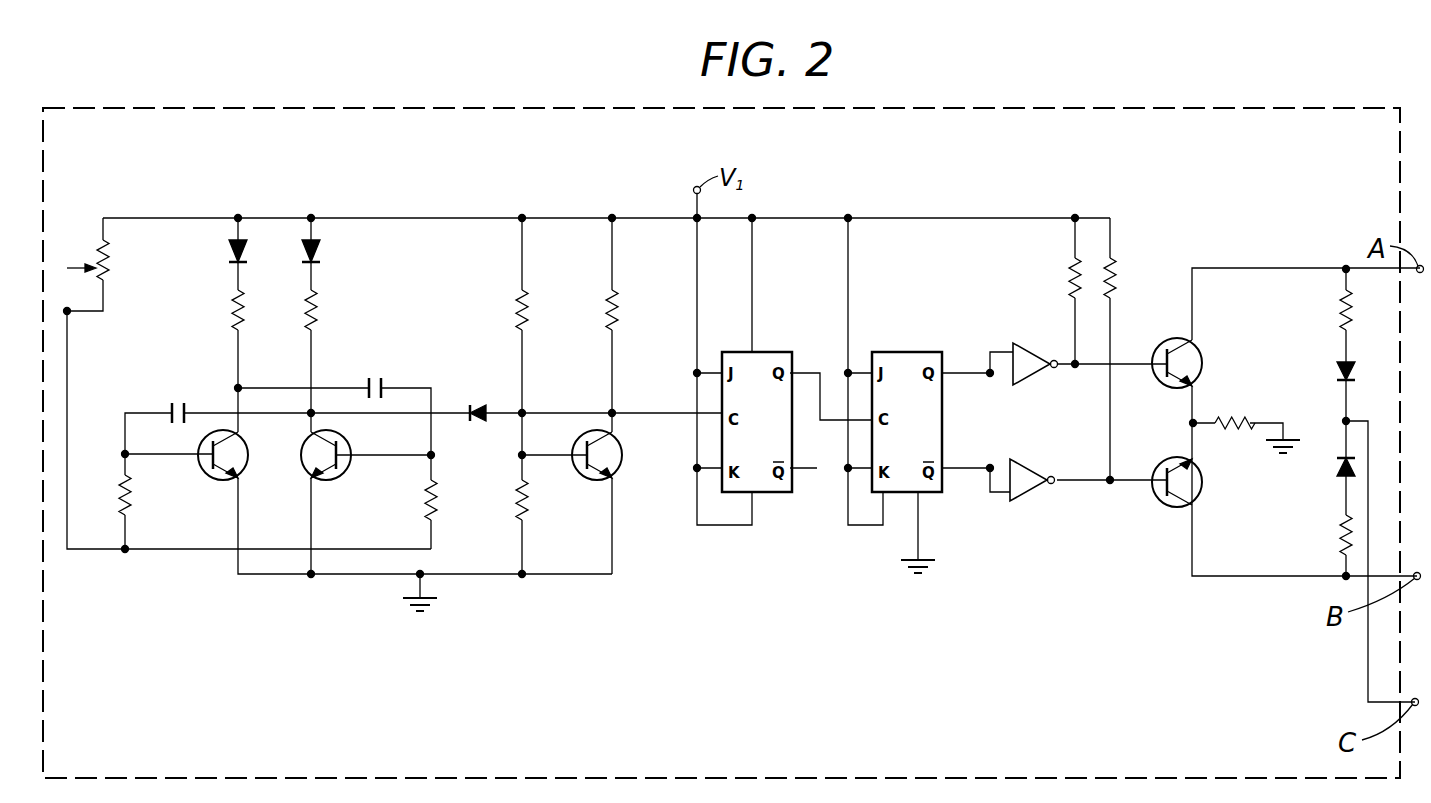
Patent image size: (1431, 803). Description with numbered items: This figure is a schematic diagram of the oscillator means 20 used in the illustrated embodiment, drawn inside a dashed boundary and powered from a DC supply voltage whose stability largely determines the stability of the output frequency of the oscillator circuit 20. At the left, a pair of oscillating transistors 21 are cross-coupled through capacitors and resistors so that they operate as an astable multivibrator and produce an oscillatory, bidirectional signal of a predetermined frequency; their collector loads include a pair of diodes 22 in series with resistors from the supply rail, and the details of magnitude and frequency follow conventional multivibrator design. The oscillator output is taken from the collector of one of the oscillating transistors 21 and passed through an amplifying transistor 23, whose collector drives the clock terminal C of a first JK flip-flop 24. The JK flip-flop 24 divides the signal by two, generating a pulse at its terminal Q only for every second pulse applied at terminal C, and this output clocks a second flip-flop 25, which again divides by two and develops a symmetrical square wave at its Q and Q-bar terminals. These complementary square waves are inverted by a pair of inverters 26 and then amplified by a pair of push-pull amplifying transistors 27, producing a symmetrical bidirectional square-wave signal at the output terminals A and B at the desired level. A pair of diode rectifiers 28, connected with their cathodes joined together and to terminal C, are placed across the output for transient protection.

The oscillator means 20 is at (284, 108).
The oscillating transistors 21 is at (301, 470).
The diodes 22 is at (306, 252).
The amplifying transistor 23 is at (623, 460).
The JK flip-flop 24 is at (772, 492).
The JK flip-flop 25 is at (900, 492).
The inverters 26 is at (1024, 381).
The push-pull amplifying transistors 27 is at (1180, 389).
The diode rectifiers 28 is at (1333, 461).